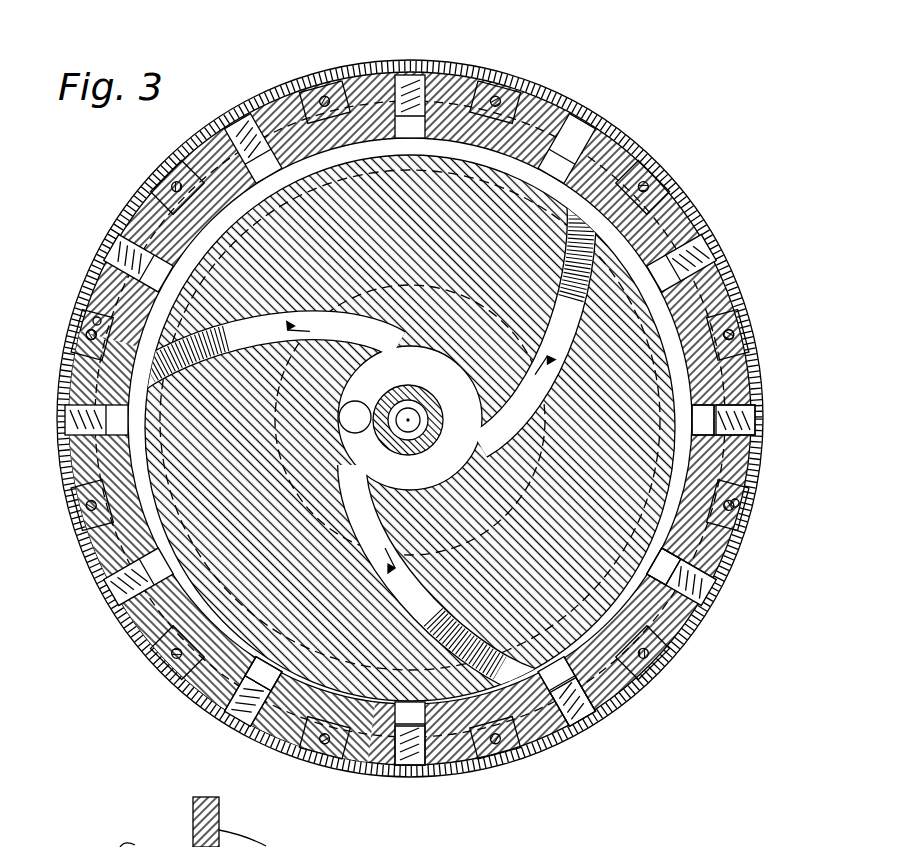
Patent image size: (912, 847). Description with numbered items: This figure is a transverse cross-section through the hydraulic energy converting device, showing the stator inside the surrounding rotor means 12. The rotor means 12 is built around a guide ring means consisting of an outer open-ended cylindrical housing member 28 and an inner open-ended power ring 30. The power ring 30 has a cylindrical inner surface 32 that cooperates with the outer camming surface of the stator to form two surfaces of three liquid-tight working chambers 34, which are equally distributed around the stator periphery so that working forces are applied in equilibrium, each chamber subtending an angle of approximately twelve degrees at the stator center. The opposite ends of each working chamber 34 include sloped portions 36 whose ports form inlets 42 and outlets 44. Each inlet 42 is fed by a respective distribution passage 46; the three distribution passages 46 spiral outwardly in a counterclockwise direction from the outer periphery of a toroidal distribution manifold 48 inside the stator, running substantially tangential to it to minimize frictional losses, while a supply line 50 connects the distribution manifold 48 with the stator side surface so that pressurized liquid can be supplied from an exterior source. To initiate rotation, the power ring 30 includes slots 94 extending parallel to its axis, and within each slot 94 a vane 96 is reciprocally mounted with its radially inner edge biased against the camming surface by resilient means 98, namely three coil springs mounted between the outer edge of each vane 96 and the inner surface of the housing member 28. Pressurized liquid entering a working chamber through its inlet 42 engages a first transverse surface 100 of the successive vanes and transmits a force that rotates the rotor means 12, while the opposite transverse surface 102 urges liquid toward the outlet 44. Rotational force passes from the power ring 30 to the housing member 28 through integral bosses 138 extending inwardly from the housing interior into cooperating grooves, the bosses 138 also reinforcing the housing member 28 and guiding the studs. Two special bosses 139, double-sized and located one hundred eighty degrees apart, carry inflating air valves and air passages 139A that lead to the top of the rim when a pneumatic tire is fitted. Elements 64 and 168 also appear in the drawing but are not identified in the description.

The rotor means 12 is at (622, 126).
The housing member 28 is at (463, 63).
The power ring 30 is at (588, 628).
The cylindrical inner surface 32 is at (437, 137).
The working chambers 34 is at (370, 137).
The sloped portions 36 is at (626, 150).
The inlets 42 is at (665, 180).
The outlets 44 is at (250, 215).
The distribution passages 46 is at (95, 275).
The distribution manifold 48 is at (426, 482).
The supply line 50 is at (360, 402).
The slots 94 is at (557, 123).
The vane 96 is at (742, 414).
The resilient means 98 is at (745, 430).
The first transverse surface 100 is at (632, 602).
The opposite transverse surface 102 is at (620, 690).
The bosses 138 is at (485, 760).
The special bosses 139 is at (85, 300).
The air passages 139A is at (93, 318).
The end plate 64 is at (257, 822).
The end plate bolt 168 is at (123, 832).